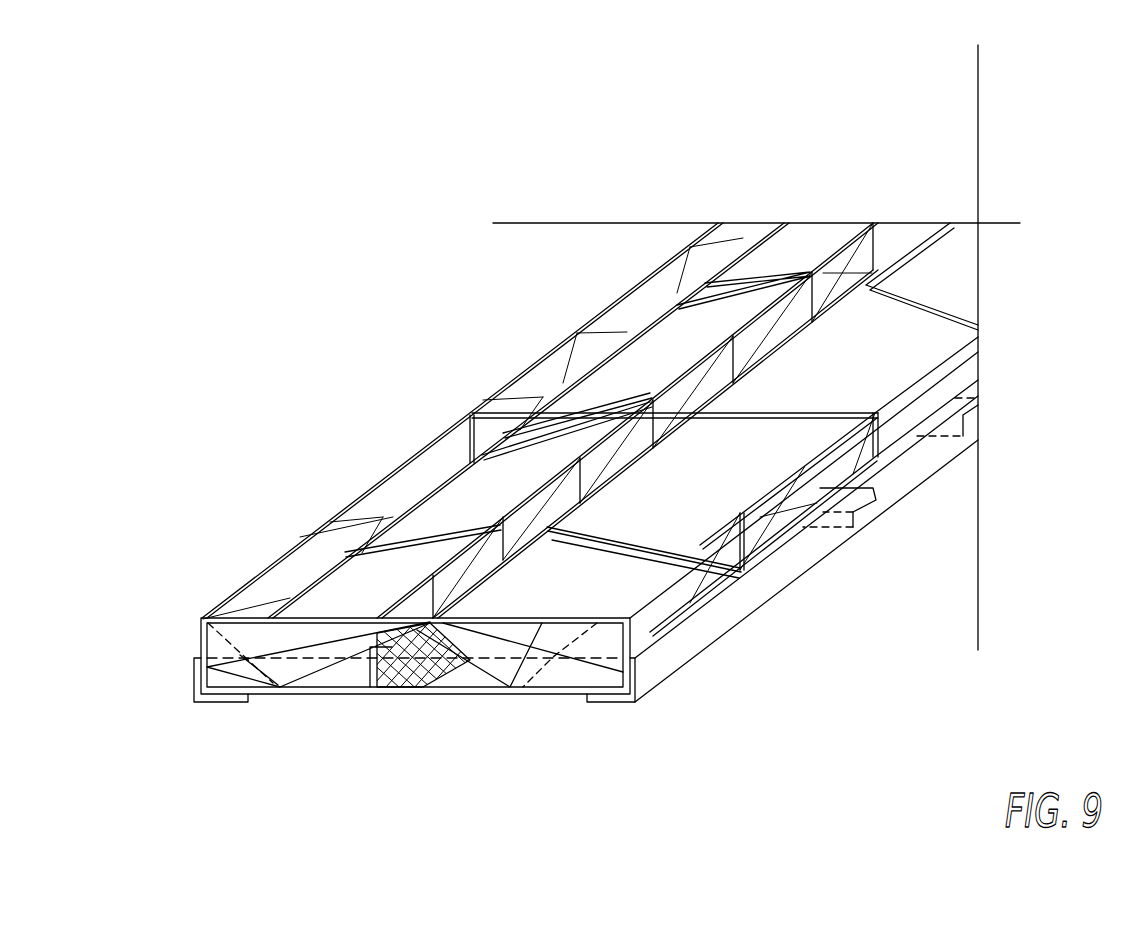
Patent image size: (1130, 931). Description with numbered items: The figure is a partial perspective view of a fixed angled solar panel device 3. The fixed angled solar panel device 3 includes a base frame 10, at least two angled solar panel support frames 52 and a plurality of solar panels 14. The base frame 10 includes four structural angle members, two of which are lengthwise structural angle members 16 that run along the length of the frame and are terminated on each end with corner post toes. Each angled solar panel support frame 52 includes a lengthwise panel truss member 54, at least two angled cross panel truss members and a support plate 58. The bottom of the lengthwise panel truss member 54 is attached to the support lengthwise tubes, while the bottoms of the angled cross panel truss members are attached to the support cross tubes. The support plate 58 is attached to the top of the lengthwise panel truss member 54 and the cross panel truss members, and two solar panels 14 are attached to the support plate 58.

The fixed angled solar panel device 3 is at (372, 360).
The base frame 10 is at (752, 642).
The solar panels 14 is at (330, 590).
The lengthwise structural angle members 16 is at (657, 663).
The angled solar panel support frame 52 is at (411, 484).
The lengthwise panel truss member 54 is at (370, 652).
The support plate 58 is at (268, 681).